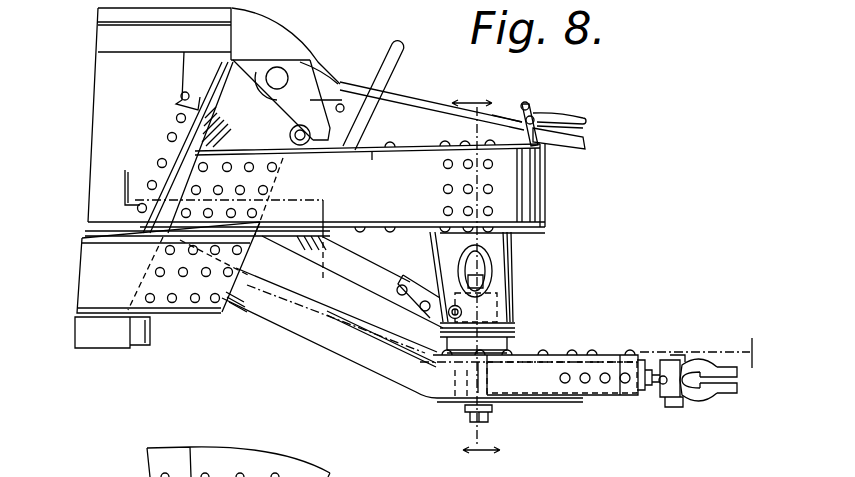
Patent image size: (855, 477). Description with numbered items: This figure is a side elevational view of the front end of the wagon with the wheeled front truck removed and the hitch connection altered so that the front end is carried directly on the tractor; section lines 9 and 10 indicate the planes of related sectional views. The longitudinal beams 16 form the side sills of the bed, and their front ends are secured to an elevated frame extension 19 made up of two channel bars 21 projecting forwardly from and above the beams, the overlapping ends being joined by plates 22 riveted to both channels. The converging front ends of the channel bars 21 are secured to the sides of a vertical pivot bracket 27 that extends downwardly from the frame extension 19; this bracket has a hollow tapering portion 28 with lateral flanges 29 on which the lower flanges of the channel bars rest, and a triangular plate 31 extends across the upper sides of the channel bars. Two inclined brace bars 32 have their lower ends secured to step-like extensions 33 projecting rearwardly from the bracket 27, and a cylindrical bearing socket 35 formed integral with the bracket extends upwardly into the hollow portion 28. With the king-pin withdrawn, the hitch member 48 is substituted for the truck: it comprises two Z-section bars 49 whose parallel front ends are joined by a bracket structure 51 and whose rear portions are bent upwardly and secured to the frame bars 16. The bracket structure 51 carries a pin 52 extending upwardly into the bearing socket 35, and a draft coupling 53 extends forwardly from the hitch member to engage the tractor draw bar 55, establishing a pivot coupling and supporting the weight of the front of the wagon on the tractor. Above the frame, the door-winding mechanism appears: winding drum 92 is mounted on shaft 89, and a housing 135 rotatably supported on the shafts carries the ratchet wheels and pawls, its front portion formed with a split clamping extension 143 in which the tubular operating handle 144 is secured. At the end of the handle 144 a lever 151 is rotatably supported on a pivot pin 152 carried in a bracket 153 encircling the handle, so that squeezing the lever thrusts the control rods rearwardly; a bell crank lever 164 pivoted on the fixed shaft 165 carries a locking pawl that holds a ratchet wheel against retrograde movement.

The vertical pivot bracket 27 is at (100, 113).
The section line 9 is at (437, 270).
The longitudinal beams 16 is at (78, 278).
The plates 22 is at (140, 287).
The elevated frame extension 19 is at (534, 199).
The triangular plate 31 is at (382, 148).
The fixed shaft 165 is at (292, 143).
The shaft 89 is at (285, 68).
The winding drum 92 is at (296, 82).
The housing 135 is at (348, 76).
The split clamping extension 143 is at (400, 46).
The bell crank lever 164 is at (388, 72).
The section line 10 is at (476, 277).
The tubular operating lever or handle 144 is at (492, 127).
The pivot pin 152 is at (537, 117).
The lever 151 is at (585, 120).
The bracket 153 is at (588, 133).
The lateral flanges 29 is at (475, 238).
The hollow tapering portion 28 is at (512, 302).
The cylindrical bearing socket 35 is at (502, 312).
The channel bars 21 is at (436, 268).
The inclined brace bars 32 is at (327, 262).
The step-like extensions 33 is at (386, 307).
The bars 49 is at (300, 337).
The hitch member 48 is at (428, 407).
The pin 52 is at (452, 405).
The bracket structure 51 is at (527, 397).
The draft coupling 53 is at (654, 378).
The tractor draw bar 55 is at (723, 393).